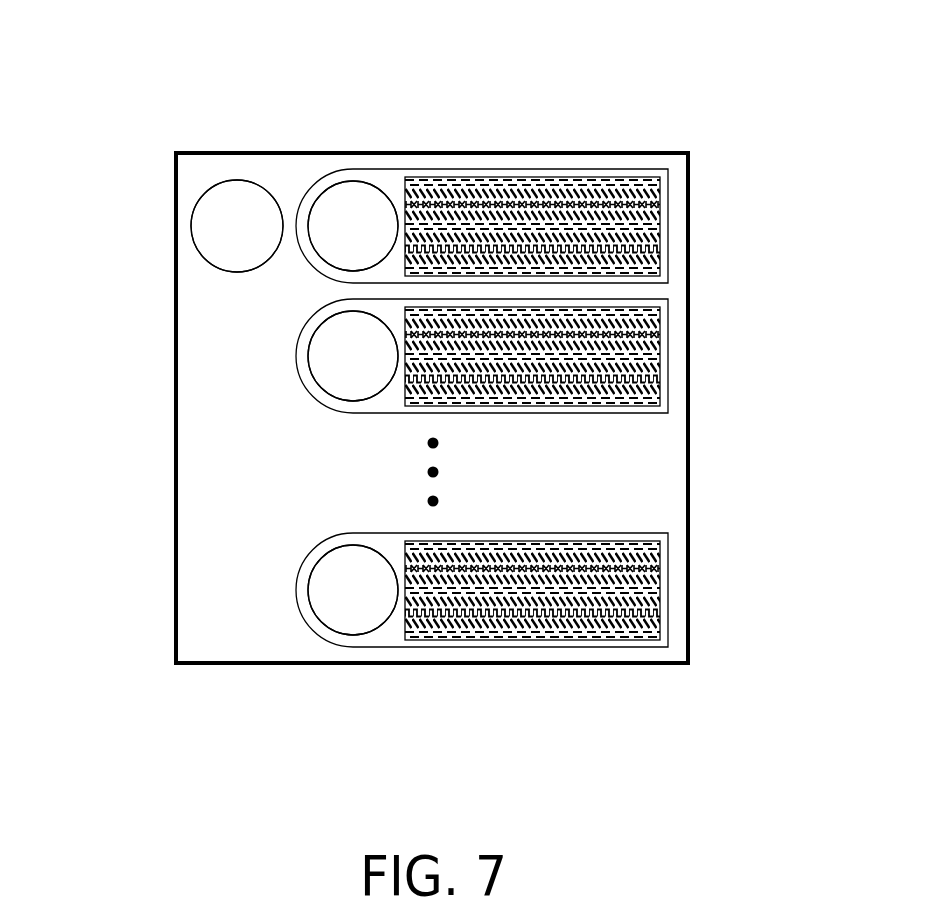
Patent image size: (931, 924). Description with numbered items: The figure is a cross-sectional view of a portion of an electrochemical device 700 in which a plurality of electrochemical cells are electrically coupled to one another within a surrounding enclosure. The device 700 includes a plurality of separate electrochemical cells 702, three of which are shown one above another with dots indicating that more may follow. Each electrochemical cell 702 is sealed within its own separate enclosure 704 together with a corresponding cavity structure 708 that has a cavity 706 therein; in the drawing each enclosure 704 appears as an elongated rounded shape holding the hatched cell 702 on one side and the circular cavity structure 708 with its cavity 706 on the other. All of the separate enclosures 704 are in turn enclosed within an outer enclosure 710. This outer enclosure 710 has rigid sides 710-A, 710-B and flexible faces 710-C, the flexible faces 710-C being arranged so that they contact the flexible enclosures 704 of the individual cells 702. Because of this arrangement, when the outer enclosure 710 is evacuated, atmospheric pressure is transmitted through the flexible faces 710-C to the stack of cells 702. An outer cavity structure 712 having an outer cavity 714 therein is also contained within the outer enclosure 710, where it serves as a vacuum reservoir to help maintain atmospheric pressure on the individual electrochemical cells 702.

The electrochemical device 700 is at (760, 106).
The electrochemical cell 702 is at (636, 225).
The enclosure 704 is at (309, 185).
The cavity 706 is at (358, 216).
The cavity structure 708 is at (330, 175).
The outer enclosure 710 is at (700, 471).
The rigid side 710-A is at (689, 641).
The rigid side 710-B is at (176, 437).
The flexible face 710-C is at (582, 153).
The outer cavity structure 712 is at (215, 268).
The outer cavity 714 is at (226, 229).